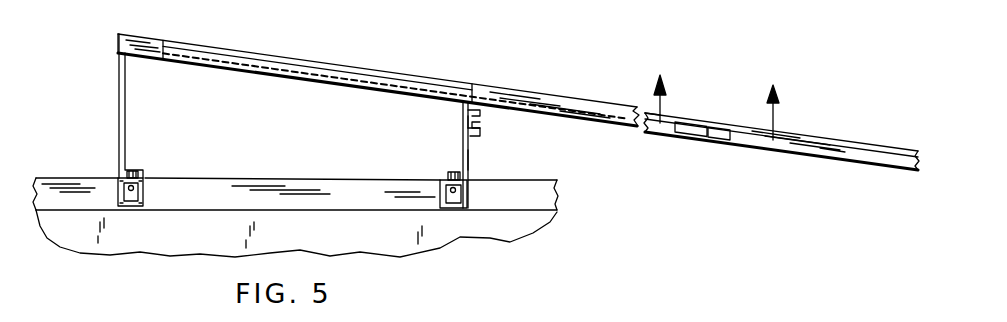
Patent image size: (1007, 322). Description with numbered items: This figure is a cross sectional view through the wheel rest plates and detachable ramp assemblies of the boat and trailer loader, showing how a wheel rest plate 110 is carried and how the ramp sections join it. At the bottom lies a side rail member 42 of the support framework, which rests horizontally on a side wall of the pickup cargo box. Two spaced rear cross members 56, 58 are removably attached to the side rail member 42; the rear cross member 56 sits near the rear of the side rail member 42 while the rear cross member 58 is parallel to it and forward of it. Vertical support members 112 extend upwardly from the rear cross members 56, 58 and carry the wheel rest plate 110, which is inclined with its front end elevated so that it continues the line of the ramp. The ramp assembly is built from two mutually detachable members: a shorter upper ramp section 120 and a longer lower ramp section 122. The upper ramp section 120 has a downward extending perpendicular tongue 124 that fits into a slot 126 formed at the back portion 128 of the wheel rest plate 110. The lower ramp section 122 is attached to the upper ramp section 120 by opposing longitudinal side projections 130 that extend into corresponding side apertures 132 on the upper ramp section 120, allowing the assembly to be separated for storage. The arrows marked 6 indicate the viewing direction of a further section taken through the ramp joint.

The wheel rest plate 110 is at (293, 80).
The vertical support member 112 is at (125, 132).
The rear cross member 58 is at (147, 185).
The side rail member 42 is at (290, 178).
The slot 126 is at (480, 128).
The tongue 124 is at (479, 137).
The back portion 128 is at (470, 162).
The rear cross member 56 is at (470, 188).
The lower ramp section 122 is at (842, 147).
The upper ramp section 120 is at (657, 138).
The side aperture 132 is at (690, 134).
The longitudinal side projection 130 is at (719, 139).
The section line 6 is at (717, 107).